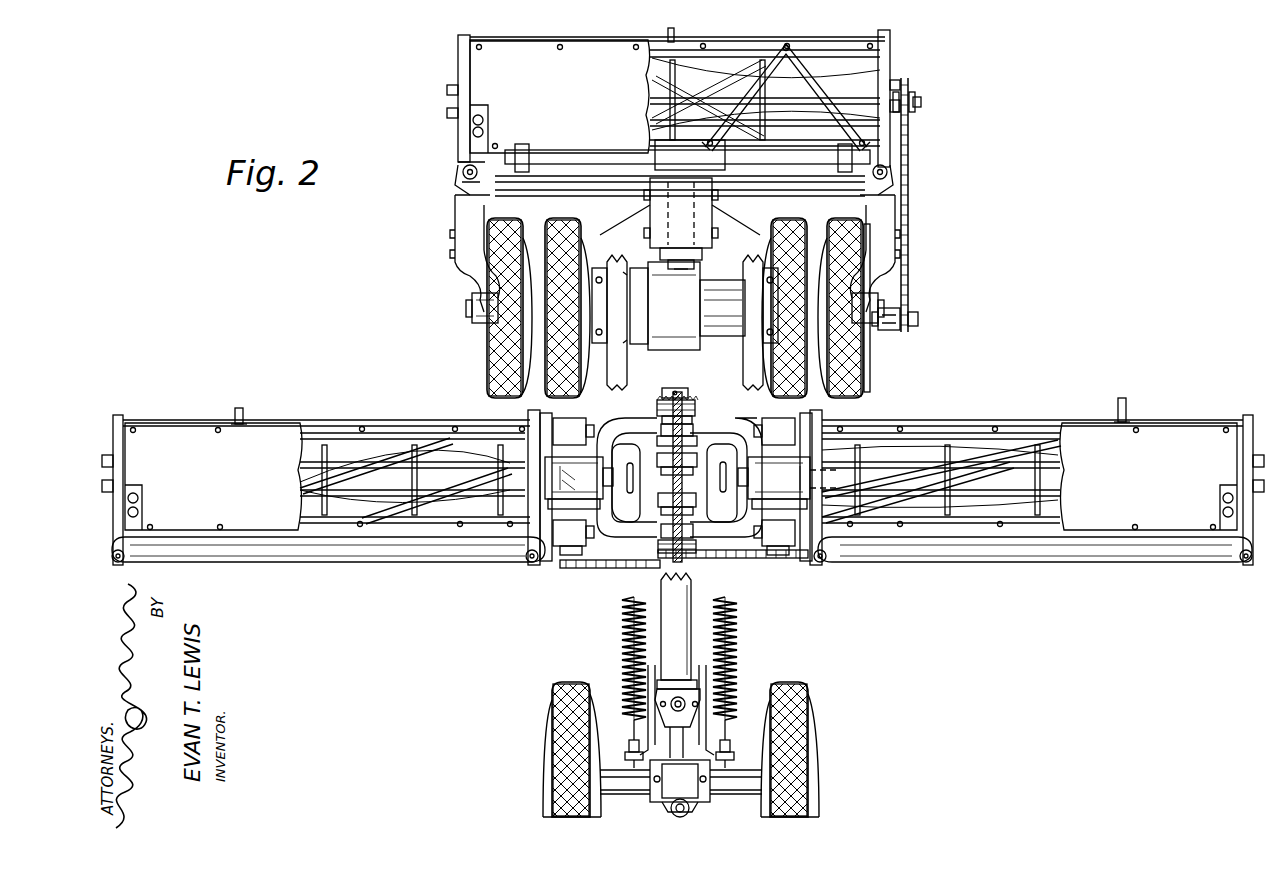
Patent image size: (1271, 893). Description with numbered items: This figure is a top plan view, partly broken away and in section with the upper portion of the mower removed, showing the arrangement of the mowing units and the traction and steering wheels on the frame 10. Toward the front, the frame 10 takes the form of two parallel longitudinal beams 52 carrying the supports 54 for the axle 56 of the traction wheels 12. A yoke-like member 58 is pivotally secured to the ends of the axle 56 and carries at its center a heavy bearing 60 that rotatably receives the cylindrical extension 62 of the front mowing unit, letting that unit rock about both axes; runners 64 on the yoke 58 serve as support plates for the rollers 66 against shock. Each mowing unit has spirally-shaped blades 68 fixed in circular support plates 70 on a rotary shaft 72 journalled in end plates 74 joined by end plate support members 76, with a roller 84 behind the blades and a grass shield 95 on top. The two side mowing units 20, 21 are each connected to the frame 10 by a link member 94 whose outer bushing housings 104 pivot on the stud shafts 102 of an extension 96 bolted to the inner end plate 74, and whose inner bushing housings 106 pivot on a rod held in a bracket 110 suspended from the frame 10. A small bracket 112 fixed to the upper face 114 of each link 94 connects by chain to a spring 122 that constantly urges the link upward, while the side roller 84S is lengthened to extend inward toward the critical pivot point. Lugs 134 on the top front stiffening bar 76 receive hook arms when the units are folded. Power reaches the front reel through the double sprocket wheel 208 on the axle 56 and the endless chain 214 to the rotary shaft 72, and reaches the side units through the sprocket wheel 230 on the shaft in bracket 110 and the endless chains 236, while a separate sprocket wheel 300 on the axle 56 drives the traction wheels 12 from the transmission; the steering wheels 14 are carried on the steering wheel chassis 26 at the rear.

The frame 10 is at (677, 665).
The traction wheels 12 is at (870, 356).
The steering wheels 14 is at (545, 718).
The side mowing unit 20 is at (190, 420).
The side mowing unit 21 is at (1188, 420).
The steering wheel chassis 26 is at (681, 788).
The longitudinal beams 52 is at (616, 262).
The supports 54 is at (598, 268).
The axle 56 is at (482, 323).
The yoke-like member 58 is at (468, 205).
The heavy bearing 60 is at (682, 255).
The cylindrical extension 62 is at (708, 238).
The runners 64 is at (458, 184).
The rollers 66 is at (465, 160).
The spirally-shaped blades 68 is at (682, 60).
The circular support plates 70 is at (425, 460).
The rotary shaft 72 is at (472, 470).
The end plates 74 is at (890, 66).
The end plate support members 76 is at (722, 46).
The roller 84 is at (682, 168).
The roller 84S is at (682, 546).
The link members 94 is at (615, 425).
The grass shield 95 is at (681, 285).
The extension 96 is at (585, 470).
The stud shafts 102 is at (578, 428).
The bushing housings 104 is at (555, 418).
The bushing housings 106 is at (660, 404).
The bracket 110 is at (672, 500).
The small bracket 112 is at (660, 435).
The upper face 114 is at (674, 479).
The spring 122 is at (618, 637).
The lugs 134 is at (240, 408).
The double sprocket wheel 208 is at (900, 330).
The endless chain 214 is at (909, 233).
The sprocket wheel 230 is at (698, 385).
The endless chain 236 is at (605, 568).
The sprocket wheel 300 is at (640, 344).